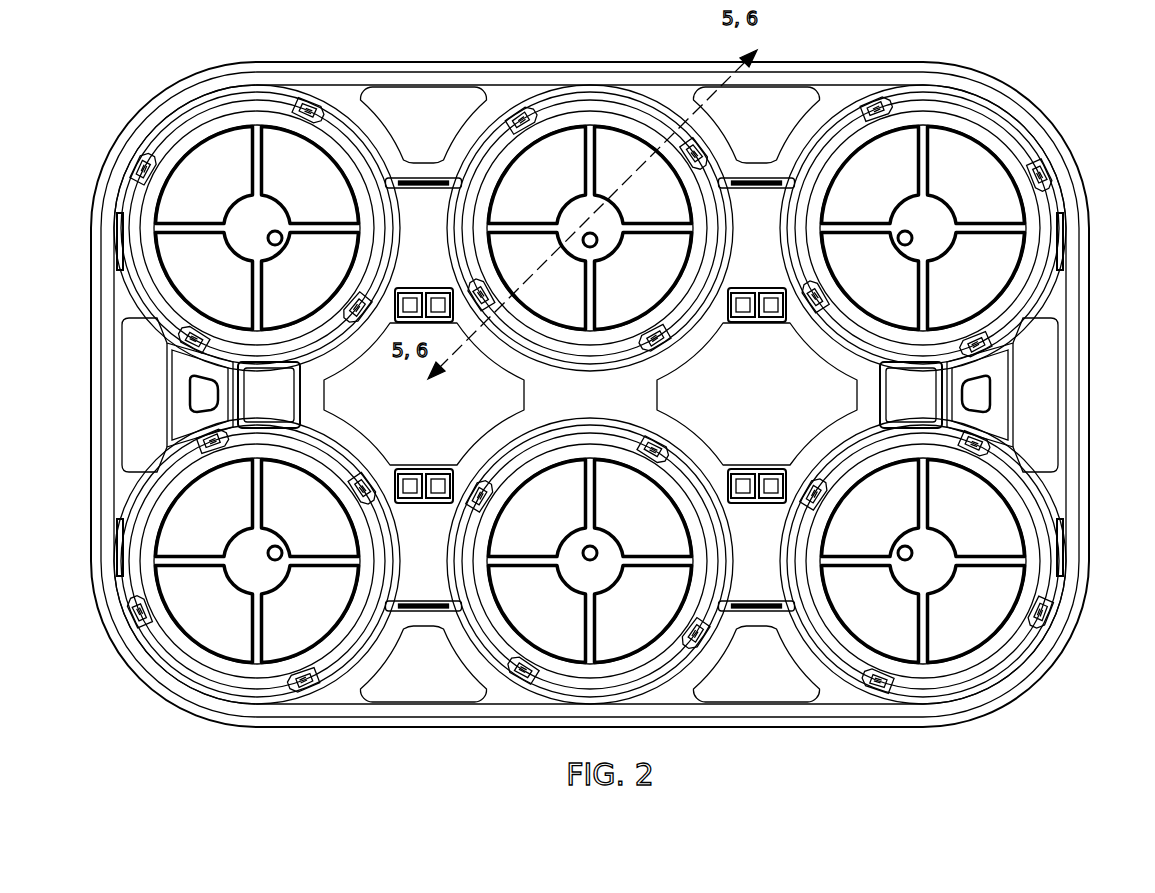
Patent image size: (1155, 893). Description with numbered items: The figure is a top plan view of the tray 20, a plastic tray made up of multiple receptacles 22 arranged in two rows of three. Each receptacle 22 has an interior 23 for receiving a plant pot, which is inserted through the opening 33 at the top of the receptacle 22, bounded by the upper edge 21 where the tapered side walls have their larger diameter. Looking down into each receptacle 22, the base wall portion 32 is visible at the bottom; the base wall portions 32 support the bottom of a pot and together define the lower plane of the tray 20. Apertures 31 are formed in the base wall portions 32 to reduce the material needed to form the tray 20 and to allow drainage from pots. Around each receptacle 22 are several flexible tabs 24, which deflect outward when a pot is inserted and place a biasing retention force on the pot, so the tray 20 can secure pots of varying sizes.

The tray 20 is at (1037, 82).
The upper edge 21 is at (833, 80).
The receptacle 22 is at (487, 138).
The interior 23 is at (340, 200).
The tab 24 is at (147, 170).
The aperture 31 is at (248, 165).
The base wall portion 32 is at (222, 120).
The opening 33 is at (330, 318).